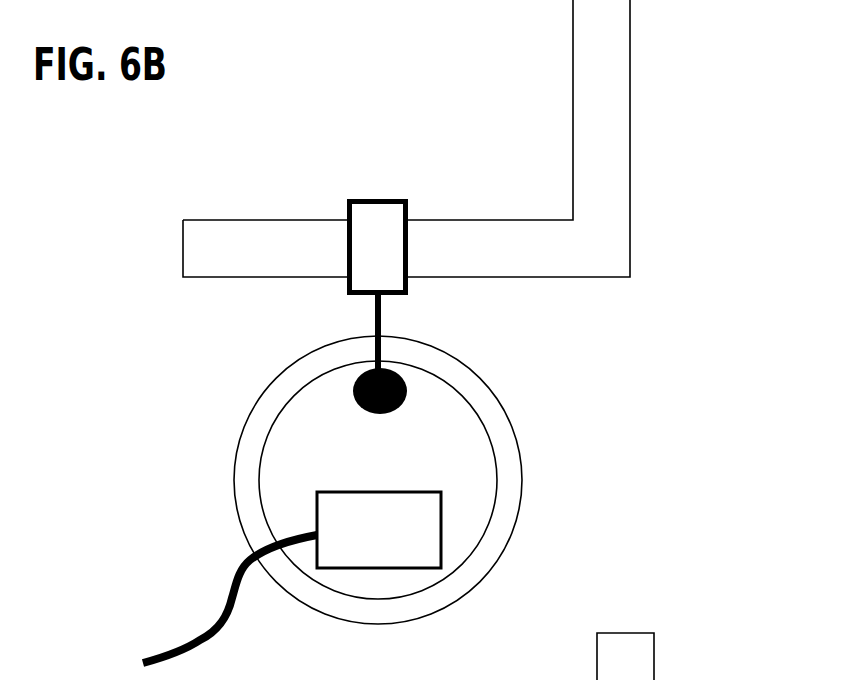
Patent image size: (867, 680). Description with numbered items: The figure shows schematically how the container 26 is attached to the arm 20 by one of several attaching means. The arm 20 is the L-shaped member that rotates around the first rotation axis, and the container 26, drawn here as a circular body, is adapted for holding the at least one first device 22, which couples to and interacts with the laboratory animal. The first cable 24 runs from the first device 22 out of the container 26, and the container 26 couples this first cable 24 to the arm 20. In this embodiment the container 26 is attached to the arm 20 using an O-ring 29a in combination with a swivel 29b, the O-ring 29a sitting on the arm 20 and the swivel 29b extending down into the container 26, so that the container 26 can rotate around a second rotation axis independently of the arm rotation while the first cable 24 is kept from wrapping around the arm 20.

The arm 20 is at (632, 202).
The first device 22 is at (440, 532).
The first cable 24 is at (167, 651).
The container 26 is at (243, 430).
The O-ring 29a is at (408, 255).
The swivel 29b is at (380, 319).